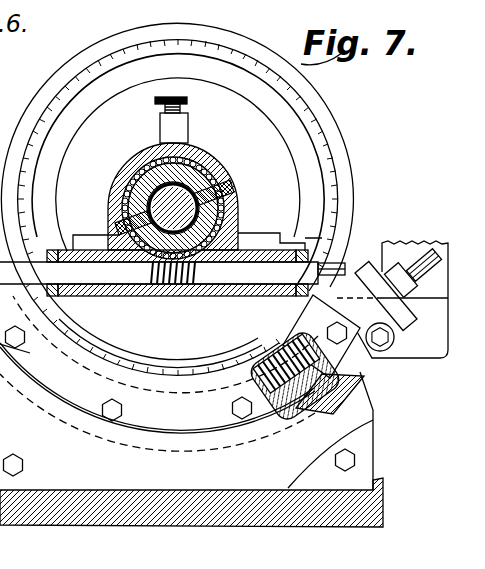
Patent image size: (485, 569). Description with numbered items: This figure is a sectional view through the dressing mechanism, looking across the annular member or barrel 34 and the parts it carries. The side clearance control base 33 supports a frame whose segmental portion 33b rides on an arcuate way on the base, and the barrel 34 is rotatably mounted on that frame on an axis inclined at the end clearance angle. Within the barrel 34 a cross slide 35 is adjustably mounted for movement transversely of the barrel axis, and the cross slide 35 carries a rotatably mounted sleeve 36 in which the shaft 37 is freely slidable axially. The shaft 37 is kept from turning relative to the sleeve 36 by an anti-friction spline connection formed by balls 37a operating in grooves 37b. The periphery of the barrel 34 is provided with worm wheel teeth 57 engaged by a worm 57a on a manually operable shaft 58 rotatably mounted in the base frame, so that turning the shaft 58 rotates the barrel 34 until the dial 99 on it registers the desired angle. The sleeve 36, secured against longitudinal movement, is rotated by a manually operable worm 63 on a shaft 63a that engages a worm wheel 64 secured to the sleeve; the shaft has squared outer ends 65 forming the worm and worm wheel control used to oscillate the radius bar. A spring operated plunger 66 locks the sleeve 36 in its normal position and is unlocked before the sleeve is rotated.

The side clearance control base 33 is at (360, 431).
The segmental portion 33b is at (343, 372).
The annular member or barrel 34 is at (346, 163).
The cross slide 35 is at (262, 243).
The sleeve 36 is at (205, 165).
The shaft 37 is at (190, 170).
The balls 37a is at (150, 199).
The grooves 37b is at (135, 178).
The worm wheel teeth 57 is at (283, 345).
The worm 57a is at (285, 398).
The manually operable shaft 58 is at (411, 262).
The worm 63 is at (165, 290).
The shaft 63a is at (107, 290).
The worm wheel 64 is at (122, 213).
The squared outer ends 65 is at (320, 300).
The spring operated plunger 66 is at (156, 100).
The dial 99 is at (204, 369).